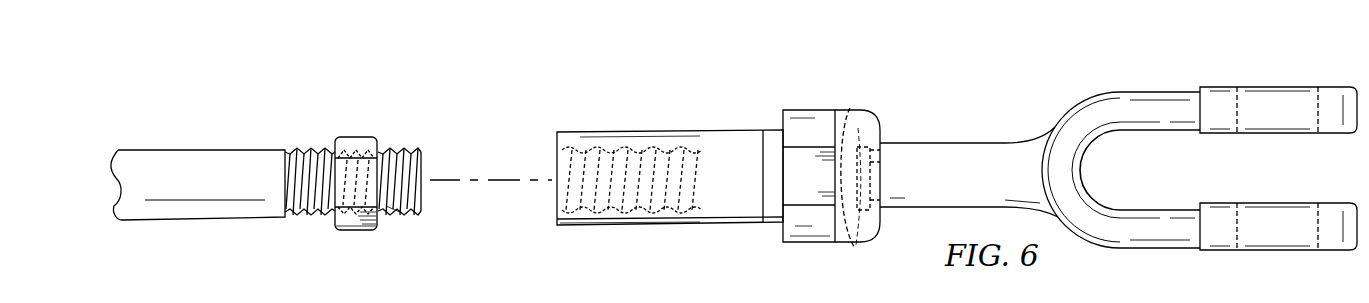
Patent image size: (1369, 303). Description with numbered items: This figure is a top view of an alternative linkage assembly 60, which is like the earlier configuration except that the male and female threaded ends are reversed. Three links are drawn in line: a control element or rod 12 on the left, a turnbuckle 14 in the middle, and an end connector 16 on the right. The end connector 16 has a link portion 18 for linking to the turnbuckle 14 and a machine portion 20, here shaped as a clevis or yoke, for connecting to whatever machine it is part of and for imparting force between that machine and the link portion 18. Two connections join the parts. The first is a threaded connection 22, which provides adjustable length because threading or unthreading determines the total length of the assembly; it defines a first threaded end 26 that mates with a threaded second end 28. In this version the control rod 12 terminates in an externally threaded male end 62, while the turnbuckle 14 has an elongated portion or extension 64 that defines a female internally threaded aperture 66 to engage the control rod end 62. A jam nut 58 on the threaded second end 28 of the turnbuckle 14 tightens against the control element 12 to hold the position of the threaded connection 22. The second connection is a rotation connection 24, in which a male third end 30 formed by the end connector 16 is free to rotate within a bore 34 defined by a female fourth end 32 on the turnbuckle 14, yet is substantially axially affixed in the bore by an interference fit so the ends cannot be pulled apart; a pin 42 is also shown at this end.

The control element 12 is at (197, 148).
The turnbuckle 14 is at (806, 103).
The end connector 16 is at (1085, 97).
The link portion 18 is at (973, 139).
The machine portion 20 is at (1158, 105).
The threaded connection 22 is at (380, 112).
The rotation connection 24 is at (886, 176).
The first threaded end 26 is at (397, 150).
The threaded second end 28 is at (605, 131).
The male third end 30 is at (858, 248).
The female fourth end 32 is at (876, 230).
The bore 34 is at (846, 108).
The pin 42 is at (882, 154).
The jam nut 58 is at (349, 230).
The linkage assembly 60 is at (984, 60).
The externally threaded male end 62 is at (400, 214).
The elongated portion 64 is at (602, 226).
The internally threaded aperture 66 is at (668, 147).